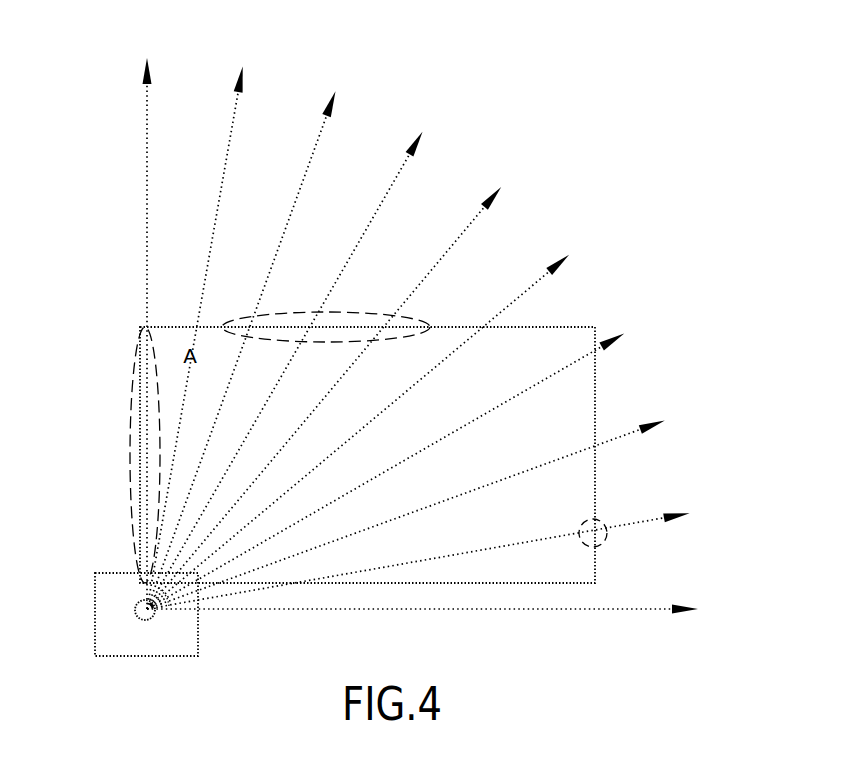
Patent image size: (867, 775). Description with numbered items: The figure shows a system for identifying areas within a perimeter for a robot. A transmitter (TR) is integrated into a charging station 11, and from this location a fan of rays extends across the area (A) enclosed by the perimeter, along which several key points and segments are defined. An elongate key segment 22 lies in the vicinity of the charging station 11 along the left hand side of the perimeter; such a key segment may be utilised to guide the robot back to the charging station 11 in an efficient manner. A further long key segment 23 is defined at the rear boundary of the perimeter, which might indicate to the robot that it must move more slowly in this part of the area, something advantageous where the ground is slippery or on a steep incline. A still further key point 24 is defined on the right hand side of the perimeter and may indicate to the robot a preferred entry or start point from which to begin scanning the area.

The charging station 11 is at (118, 573).
The elongate key segment 22 is at (130, 425).
The long key segment 23 is at (354, 311).
The key point 24 is at (605, 522).